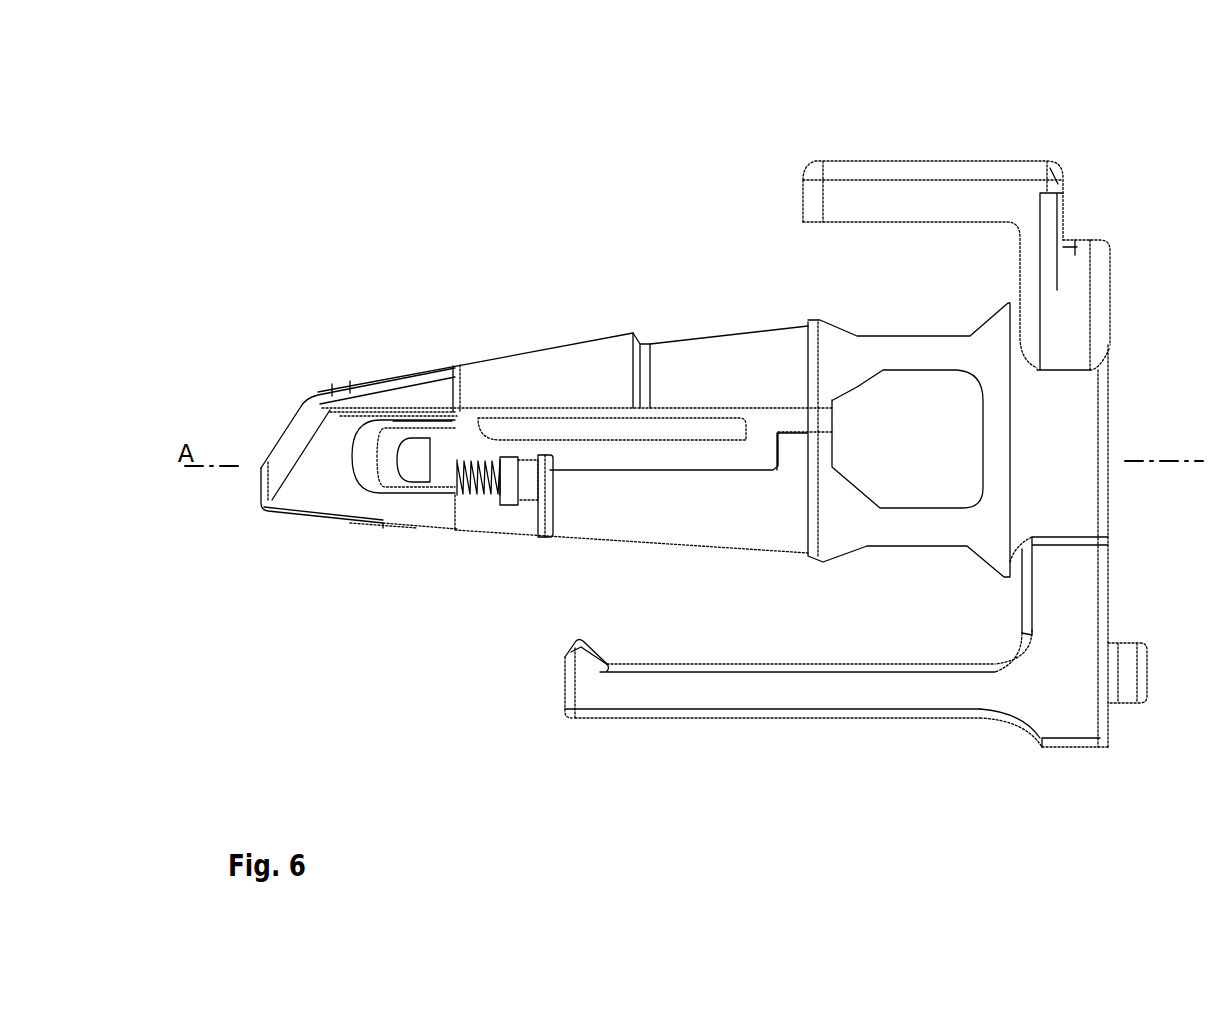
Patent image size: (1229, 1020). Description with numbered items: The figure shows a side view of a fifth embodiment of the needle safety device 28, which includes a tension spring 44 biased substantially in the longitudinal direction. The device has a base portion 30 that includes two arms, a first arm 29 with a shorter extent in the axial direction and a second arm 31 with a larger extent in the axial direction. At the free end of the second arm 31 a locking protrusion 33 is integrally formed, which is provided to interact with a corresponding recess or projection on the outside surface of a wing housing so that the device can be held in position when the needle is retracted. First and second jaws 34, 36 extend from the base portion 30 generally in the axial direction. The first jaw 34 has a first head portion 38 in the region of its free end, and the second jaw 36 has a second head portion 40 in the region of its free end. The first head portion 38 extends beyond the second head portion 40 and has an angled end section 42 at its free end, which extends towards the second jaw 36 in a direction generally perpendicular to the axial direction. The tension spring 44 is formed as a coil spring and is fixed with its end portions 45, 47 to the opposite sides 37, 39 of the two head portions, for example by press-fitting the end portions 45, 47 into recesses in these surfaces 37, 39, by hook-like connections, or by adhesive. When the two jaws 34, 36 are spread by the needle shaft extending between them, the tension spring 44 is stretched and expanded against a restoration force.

The needle safety device 28 is at (1112, 347).
The first arm 29 is at (890, 196).
The base portion 30 is at (1072, 440).
The second arm 31 is at (740, 692).
The locking protrusion 33 is at (567, 655).
The first jaw 34 is at (718, 358).
The second jaw 36 is at (752, 538).
The opposite side of head portion 37 is at (505, 505).
The first head portion 38 is at (378, 392).
The opposite side of head portion 39 is at (450, 417).
The second head portion 40 is at (553, 533).
The angled end section 42 is at (298, 418).
The tension spring 44 is at (473, 397).
The end portion of tension spring 45 is at (457, 505).
The end portion of tension spring 47 is at (490, 498).